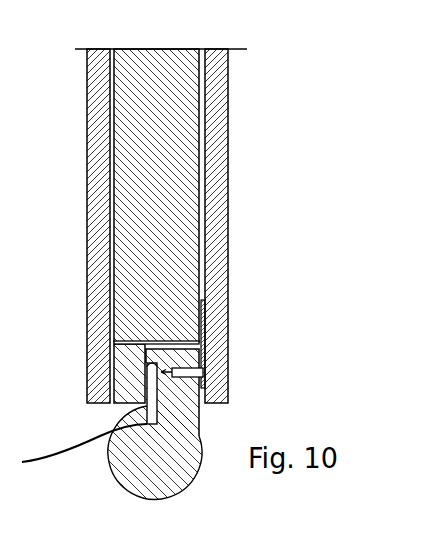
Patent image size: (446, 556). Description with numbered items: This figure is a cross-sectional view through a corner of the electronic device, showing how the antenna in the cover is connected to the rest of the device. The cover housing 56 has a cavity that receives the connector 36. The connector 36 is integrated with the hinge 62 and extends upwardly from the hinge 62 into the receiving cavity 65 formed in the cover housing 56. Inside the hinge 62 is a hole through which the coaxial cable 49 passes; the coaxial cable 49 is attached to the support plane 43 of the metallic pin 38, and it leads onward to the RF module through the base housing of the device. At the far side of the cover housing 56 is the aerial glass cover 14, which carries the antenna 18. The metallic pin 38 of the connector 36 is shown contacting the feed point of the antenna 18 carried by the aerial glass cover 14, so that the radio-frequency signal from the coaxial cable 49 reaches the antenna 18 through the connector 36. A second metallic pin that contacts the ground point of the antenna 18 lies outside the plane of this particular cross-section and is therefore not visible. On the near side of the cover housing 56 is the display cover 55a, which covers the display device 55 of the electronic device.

The aerial glass cover 14 is at (223, 163).
The display device 55 is at (155, 58).
The display cover 55a is at (98, 115).
The antenna 18 is at (203, 330).
The cover housing 56 is at (122, 350).
The receiving cavity 65 is at (151, 367).
The support plane 43 is at (146, 405).
The metallic pin 38 is at (203, 369).
The connector 36 is at (200, 388).
The coaxial cable 49 is at (39, 466).
The hinge 62 is at (189, 467).